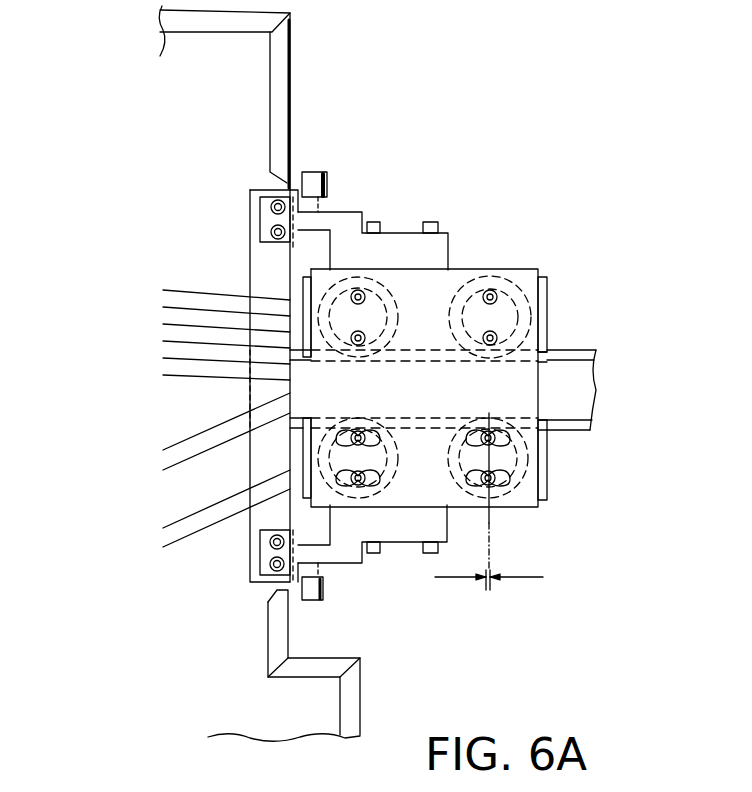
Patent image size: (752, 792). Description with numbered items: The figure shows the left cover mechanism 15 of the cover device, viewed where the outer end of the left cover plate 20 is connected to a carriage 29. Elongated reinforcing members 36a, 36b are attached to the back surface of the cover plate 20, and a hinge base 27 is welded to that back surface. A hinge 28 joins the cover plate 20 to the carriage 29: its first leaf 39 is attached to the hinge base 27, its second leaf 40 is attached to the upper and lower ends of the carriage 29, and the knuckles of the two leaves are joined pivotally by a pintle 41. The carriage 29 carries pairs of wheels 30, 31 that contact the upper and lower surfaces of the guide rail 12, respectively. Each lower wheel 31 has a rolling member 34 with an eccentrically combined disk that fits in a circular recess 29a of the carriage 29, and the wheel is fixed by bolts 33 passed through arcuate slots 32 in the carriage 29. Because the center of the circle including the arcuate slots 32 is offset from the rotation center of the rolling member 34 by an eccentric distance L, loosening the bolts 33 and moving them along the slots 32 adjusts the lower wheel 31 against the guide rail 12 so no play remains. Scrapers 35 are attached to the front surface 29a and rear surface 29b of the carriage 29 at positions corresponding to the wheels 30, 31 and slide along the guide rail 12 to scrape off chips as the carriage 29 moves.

The guide rail 12 is at (573, 363).
The cover mechanism 15 is at (373, 158).
The left cover plate 20 is at (283, 44).
The hinge base 27 is at (258, 267).
The hinge 28 is at (392, 204).
The carriage 29 is at (408, 488).
The front surface of carriage 29a is at (288, 387).
The rear surface of carriage 29b is at (540, 393).
The upper wheel 30 is at (512, 268).
The lower wheel 31 is at (535, 468).
The arcuate slot 32 is at (510, 453).
The bolt 33 is at (505, 430).
The rolling member 34 is at (525, 488).
The scraper 35 is at (547, 296).
The reinforcing member 36a is at (188, 300).
The reinforcing member 36b is at (173, 457).
The first leaf 39 is at (262, 217).
The second leaf 40 is at (443, 240).
The pintle 41 is at (317, 173).
The eccentric distance L is at (488, 592).